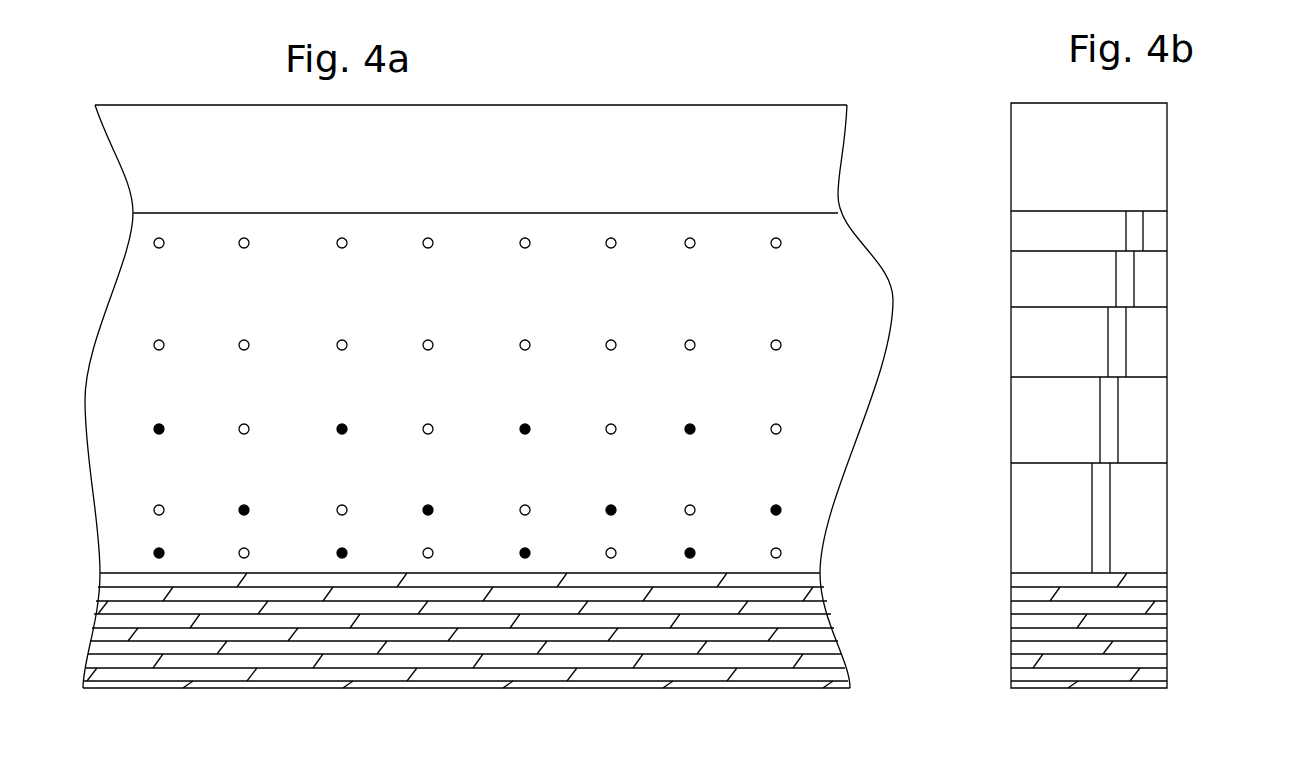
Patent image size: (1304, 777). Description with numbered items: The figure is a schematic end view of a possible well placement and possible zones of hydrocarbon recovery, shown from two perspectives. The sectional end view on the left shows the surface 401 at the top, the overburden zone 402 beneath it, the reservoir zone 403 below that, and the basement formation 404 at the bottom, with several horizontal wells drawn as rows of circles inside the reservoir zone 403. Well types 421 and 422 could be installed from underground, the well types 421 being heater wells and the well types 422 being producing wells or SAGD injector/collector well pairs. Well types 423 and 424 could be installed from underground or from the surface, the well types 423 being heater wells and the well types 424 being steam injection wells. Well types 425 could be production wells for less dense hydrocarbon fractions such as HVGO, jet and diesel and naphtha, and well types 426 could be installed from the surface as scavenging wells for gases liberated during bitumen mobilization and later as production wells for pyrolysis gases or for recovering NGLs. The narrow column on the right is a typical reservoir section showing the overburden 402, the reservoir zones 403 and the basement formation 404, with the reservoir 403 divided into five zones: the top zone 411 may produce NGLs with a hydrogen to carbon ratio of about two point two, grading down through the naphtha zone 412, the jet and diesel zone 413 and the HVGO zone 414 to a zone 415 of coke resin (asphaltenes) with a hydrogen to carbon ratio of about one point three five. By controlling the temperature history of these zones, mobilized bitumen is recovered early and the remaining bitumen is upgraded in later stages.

In FIG. 4A, the surface 401 is at (602, 105).
In FIG. 4A, the overburden zone 402 is at (842, 160).
In FIG. 4B, the overburden zone 402 is at (1010, 157).
In FIG. 4A, the reservoir zone 403 is at (885, 267).
In FIG. 4B, the reservoir zone 403 is at (1003, 215).
In FIG. 4A, the basement formation 404 is at (845, 640).
In FIG. 4B, the basement formation 404 is at (1005, 630).
In FIG. 4B, the top zone 411 is at (1137, 228).
In FIG. 4B, the naphtha zone 412 is at (1123, 285).
In FIG. 4B, the jet and diesel zone 413 is at (1117, 348).
In FIG. 4B, the HVGO zone 414 is at (1110, 420).
In FIG. 4B, the coke resin zone 415 is at (1103, 503).
In FIG. 4A, the heater wells 421 is at (153, 552).
In FIG. 4A, the producing wells 422 is at (154, 510).
In FIG. 4A, the heater wells 423 is at (154, 428).
In FIG. 4A, the steam injection wells 424 is at (239, 431).
In FIG. 4A, the production wells 425 is at (238, 343).
In FIG. 4A, the scavenging wells 426 is at (347, 246).